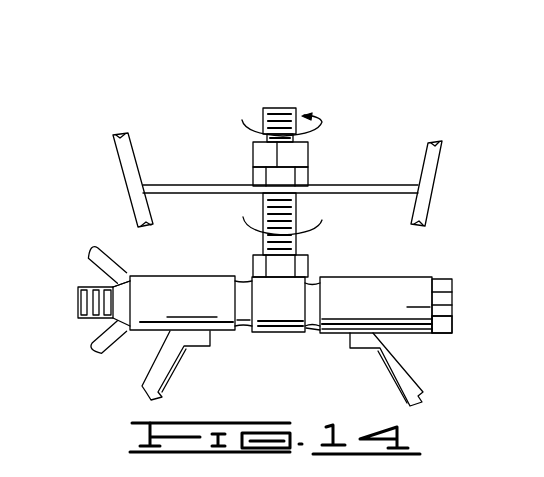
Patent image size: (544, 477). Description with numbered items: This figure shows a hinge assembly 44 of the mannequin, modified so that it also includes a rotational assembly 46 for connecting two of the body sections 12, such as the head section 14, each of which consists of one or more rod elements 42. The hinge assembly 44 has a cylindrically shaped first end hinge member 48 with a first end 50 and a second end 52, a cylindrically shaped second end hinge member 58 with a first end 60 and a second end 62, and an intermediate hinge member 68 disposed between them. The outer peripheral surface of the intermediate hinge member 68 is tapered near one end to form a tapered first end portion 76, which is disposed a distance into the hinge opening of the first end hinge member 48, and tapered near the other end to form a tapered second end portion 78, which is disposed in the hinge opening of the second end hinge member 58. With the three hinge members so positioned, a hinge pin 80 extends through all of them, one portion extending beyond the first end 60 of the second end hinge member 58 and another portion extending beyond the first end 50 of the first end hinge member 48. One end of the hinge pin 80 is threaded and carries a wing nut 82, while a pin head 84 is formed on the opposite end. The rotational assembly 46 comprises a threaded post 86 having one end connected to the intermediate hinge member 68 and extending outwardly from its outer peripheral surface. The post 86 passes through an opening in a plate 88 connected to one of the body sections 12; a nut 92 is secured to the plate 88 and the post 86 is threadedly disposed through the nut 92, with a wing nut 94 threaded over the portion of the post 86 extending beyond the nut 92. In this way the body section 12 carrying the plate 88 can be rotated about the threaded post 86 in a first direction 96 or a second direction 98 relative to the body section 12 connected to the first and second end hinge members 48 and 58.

The body section 12 is at (413, 153).
The head section 14 is at (397, 380).
The rod element 42 is at (124, 160).
The hinge assembly 44 is at (386, 279).
The rotational assembly 46 is at (300, 210).
The first end hinge member 48 is at (162, 275).
The first end 50 is at (116, 278).
The second end 52 is at (247, 330).
The second end hinge member 58 is at (408, 329).
The first end 60 is at (452, 300).
The second end 62 is at (313, 287).
The intermediate hinge member 68 is at (290, 333).
The tapered first end portion 76 is at (245, 283).
The tapered second end portion 78 is at (310, 333).
The hinge pin 80 is at (90, 316).
The wing nut 82 is at (98, 258).
The pin head 84 is at (453, 322).
The post 86 is at (283, 108).
The plate 88 is at (383, 185).
The nut 92 is at (263, 178).
The wing nut 94 is at (262, 153).
The first direction 96 is at (243, 121).
The second direction 98 is at (262, 218).